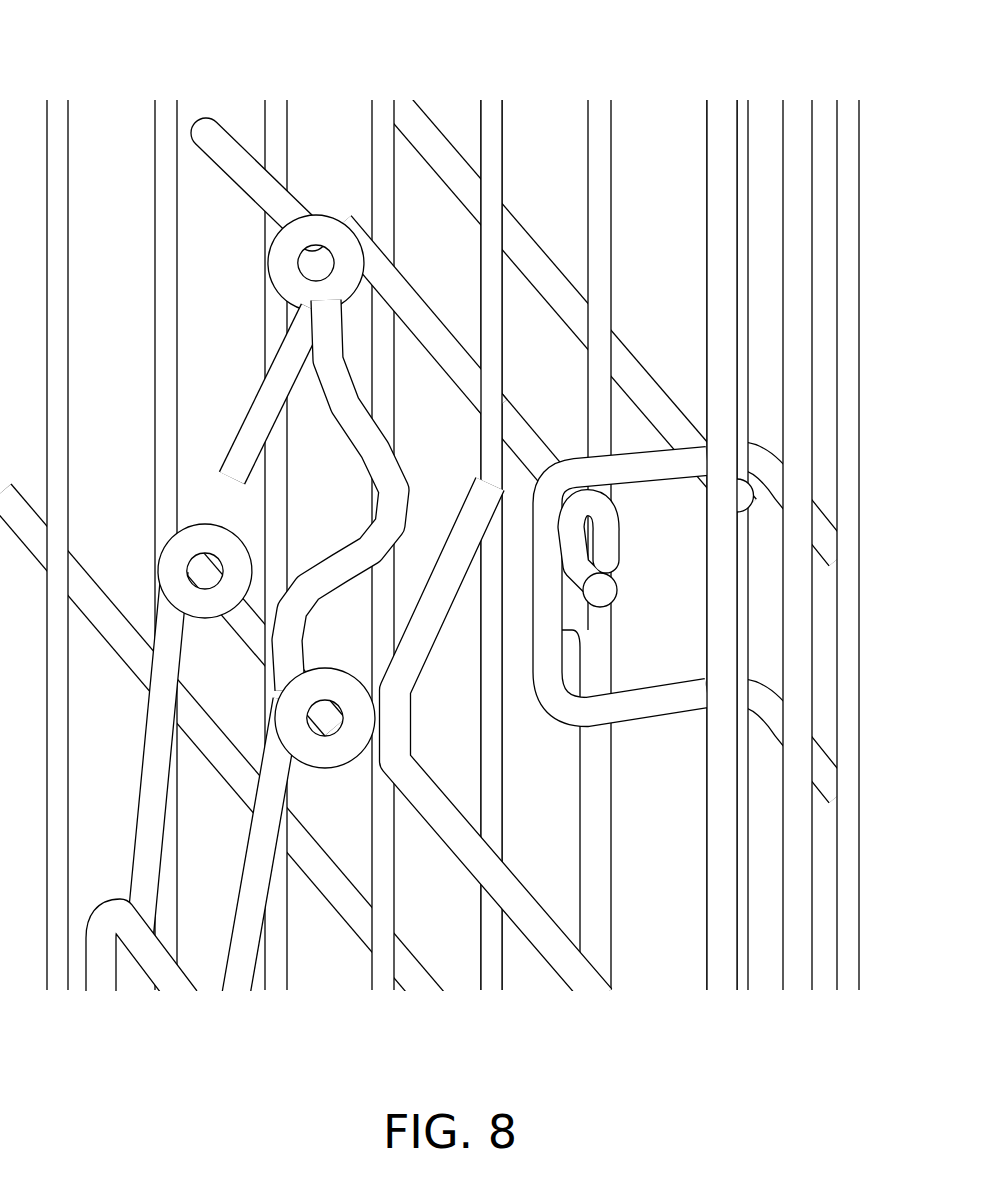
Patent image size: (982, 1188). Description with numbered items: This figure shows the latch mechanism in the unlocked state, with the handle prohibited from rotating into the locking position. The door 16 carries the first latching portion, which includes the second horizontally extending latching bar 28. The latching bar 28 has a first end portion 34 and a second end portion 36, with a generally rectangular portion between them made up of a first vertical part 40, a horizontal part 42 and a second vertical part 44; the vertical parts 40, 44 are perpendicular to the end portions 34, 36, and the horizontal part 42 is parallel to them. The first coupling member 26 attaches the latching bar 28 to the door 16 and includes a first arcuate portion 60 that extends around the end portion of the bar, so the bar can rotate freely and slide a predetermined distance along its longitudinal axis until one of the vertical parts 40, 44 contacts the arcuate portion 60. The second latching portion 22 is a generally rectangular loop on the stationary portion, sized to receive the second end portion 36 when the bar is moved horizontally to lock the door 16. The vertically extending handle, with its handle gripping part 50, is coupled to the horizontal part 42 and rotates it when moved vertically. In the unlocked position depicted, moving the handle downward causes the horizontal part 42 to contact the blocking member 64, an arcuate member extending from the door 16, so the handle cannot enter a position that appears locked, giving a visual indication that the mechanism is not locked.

The door 16 is at (612, 136).
The second latching portion 22 is at (654, 712).
The first coupling member 26 is at (402, 690).
The second horizontally extending latching bar 28 is at (525, 433).
The first end portion 34 is at (217, 128).
The second end portion 36 is at (620, 592).
The first vertical part 40 is at (233, 457).
The horizontal part 42 is at (250, 612).
The second vertical part 44 is at (457, 597).
The handle gripping part 50 is at (242, 965).
The first arcuate portion 60 is at (267, 290).
The blocking member 64 is at (318, 572).